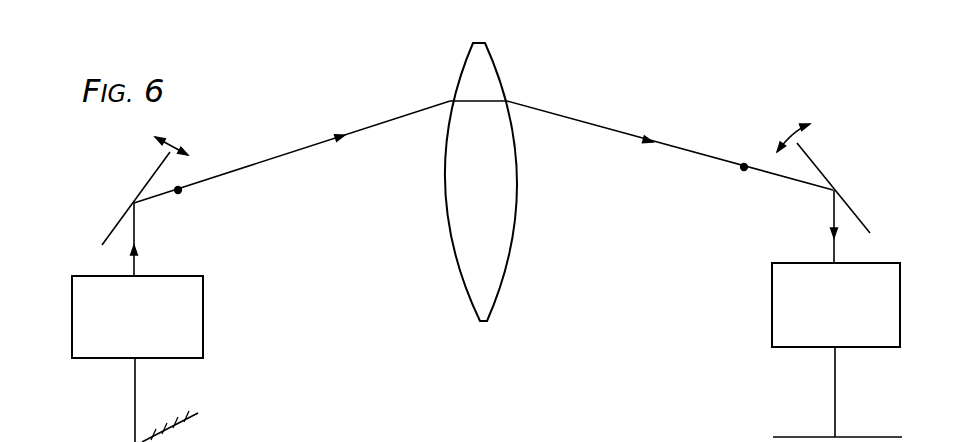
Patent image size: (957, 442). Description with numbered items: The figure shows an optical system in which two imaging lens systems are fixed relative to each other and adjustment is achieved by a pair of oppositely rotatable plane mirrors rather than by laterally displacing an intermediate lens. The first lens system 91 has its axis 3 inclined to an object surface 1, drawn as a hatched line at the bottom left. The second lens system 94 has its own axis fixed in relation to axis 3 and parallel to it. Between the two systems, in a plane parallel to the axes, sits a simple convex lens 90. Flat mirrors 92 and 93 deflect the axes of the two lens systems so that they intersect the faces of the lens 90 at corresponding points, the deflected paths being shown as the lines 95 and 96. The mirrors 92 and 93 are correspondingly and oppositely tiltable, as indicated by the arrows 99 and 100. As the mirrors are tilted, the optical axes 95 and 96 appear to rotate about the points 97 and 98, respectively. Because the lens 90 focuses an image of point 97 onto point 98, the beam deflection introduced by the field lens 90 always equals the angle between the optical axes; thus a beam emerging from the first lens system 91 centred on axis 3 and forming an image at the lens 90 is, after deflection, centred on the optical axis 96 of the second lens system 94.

The object surface 1 is at (191, 413).
The axis of first lens system 3 is at (140, 265).
The convex lens 90 is at (490, 66).
The first lens system 91 is at (137, 317).
The flat mirror 92 is at (150, 179).
The flat mirror 93 is at (823, 173).
The second lens system 94 is at (836, 305).
The optical axis 95 is at (284, 156).
The optical axis 96 is at (690, 150).
The rotation point 97 is at (178, 190).
The rotation point 98 is at (744, 167).
The tilt arrow 99 is at (178, 143).
The tilt arrow 100 is at (789, 134).